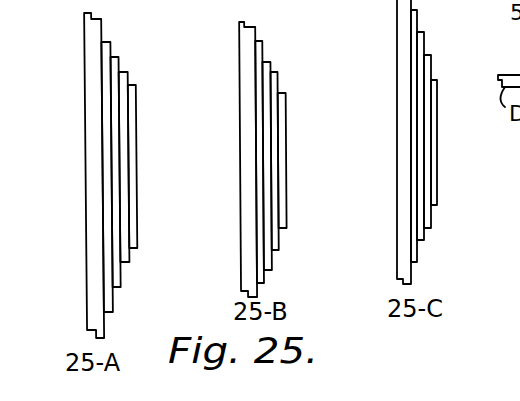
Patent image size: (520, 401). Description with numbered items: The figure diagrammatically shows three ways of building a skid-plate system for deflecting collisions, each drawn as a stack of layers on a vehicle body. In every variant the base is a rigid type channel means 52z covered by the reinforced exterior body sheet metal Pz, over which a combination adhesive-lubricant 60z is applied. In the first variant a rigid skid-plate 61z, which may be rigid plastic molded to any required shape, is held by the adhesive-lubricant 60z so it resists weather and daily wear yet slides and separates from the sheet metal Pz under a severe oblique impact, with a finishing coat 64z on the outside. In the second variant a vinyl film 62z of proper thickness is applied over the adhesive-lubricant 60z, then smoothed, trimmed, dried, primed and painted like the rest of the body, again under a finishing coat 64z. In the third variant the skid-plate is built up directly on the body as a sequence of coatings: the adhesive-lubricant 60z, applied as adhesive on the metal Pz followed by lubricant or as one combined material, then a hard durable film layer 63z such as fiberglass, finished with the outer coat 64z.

The rigid type channel means 52z is at (84, 58).
The reinforced exterior body sheet metal Pz is at (104, 88).
The adhesive-lubricant 60z is at (115, 117).
The skid-plate of rigid type material 61z is at (123, 176).
The vinyl film 62z is at (272, 172).
The fourth plate (variant C) 63z is at (430, 164).
The finishing coat 64z is at (132, 217).